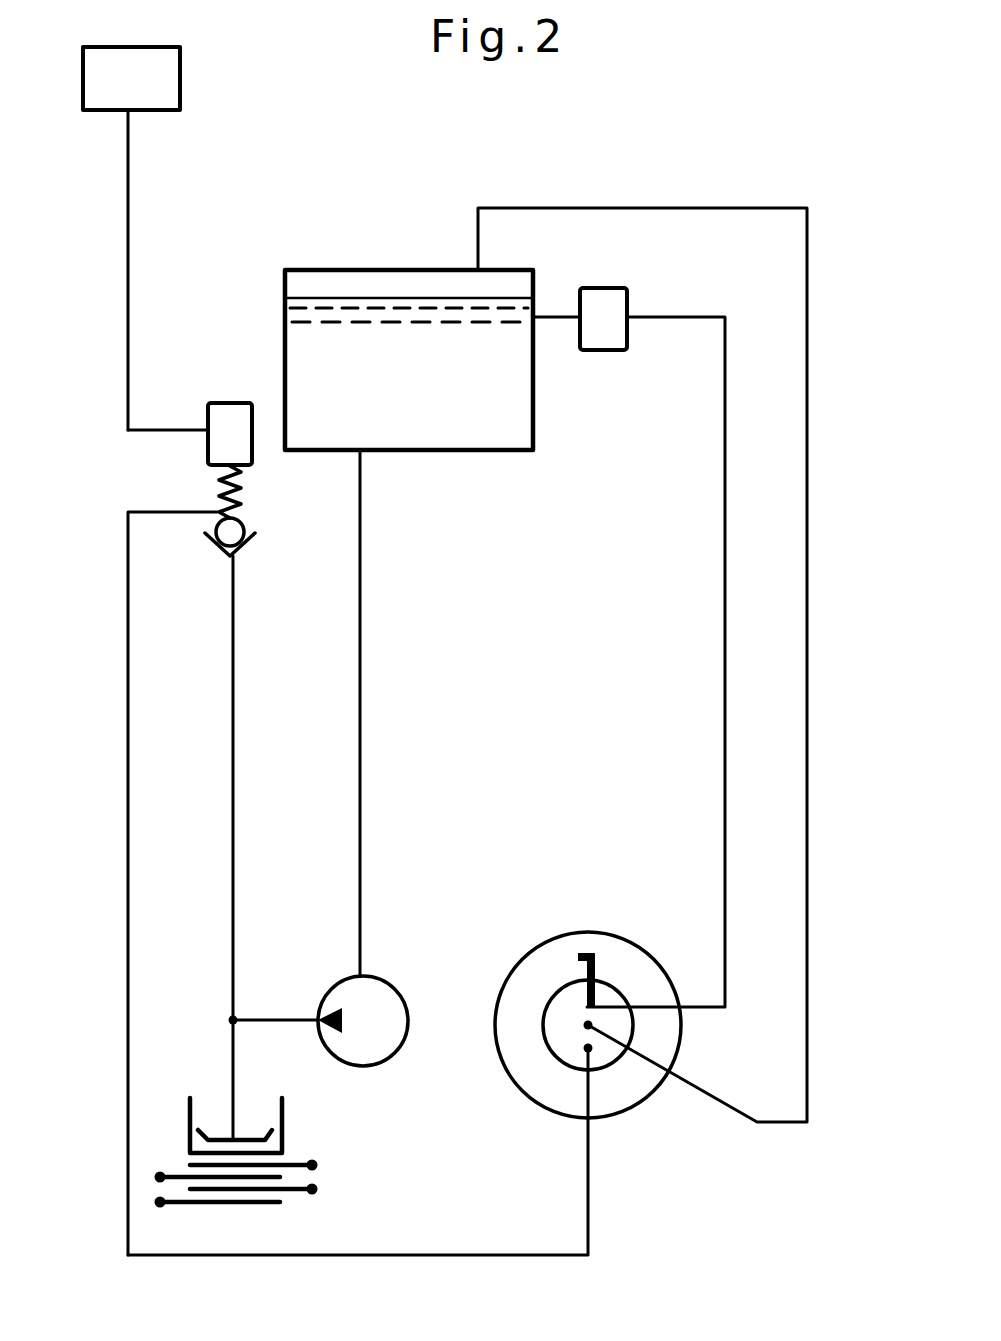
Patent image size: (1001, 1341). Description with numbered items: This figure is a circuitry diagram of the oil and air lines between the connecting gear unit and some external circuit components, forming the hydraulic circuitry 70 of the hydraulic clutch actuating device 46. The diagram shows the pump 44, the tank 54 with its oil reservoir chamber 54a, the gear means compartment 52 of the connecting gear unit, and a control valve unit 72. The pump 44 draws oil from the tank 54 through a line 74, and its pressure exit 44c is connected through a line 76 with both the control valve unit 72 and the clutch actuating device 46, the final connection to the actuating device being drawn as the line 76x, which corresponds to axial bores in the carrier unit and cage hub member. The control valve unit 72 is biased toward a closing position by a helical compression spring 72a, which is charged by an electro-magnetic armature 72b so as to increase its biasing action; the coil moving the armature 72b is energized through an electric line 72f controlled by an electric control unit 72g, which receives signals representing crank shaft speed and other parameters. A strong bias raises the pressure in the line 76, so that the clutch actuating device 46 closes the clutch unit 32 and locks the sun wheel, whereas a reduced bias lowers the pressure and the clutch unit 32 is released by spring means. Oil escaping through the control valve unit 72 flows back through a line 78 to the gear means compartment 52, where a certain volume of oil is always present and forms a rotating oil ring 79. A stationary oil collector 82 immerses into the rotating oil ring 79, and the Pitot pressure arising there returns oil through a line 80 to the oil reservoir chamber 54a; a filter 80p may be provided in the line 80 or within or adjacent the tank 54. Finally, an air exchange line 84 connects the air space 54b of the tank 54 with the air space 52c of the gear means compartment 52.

The clutch unit 32 is at (234, 1210).
The pump 44 is at (383, 997).
The pressure exit 44c is at (280, 1018).
The clutch actuating device 46 is at (282, 1112).
The gear means compartment 52 is at (614, 976).
The air space 52c is at (565, 1037).
The tank 54 is at (455, 341).
The oil reservoir chamber 54a is at (435, 384).
The air space 54b is at (378, 288).
The hydraulic circuitry 70 is at (401, 1262).
The control valve unit 72 is at (170, 472).
The helical compression spring 72a is at (242, 500).
The electro-magnetic armature 72b is at (217, 403).
The electric line 72f is at (128, 258).
The electric control unit 72g is at (180, 83).
The line 74 is at (361, 700).
The line 76 is at (234, 754).
The line 76x is at (230, 1070).
The line 78 is at (128, 796).
The rotating oil ring 79 is at (657, 982).
The line 80 is at (725, 642).
The filter 80p is at (627, 295).
The stationary oil collector 82 is at (590, 952).
The air exchange line 84 is at (807, 585).